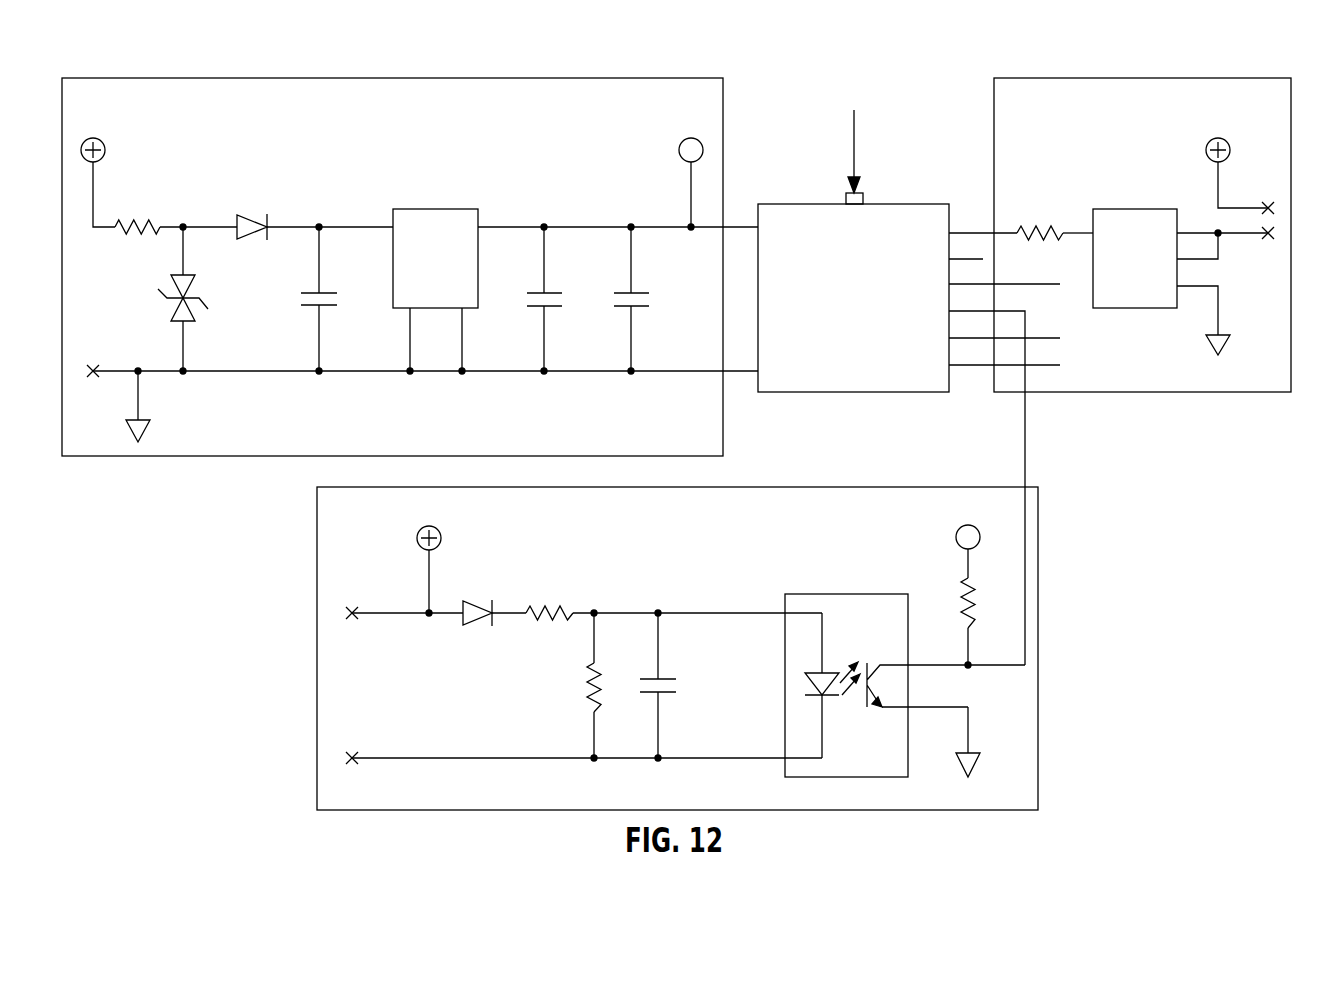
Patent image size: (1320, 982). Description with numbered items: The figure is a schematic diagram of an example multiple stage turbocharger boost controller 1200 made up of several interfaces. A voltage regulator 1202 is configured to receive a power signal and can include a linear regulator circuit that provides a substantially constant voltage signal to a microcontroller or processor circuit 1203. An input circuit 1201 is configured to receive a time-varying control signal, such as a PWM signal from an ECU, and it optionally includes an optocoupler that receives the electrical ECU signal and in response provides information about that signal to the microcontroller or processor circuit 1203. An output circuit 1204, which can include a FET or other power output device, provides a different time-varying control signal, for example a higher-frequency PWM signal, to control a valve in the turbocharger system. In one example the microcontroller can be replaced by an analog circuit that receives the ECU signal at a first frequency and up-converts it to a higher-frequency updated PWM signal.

The circuit 1200 is at (140, 45).
The input circuit 1201 is at (746, 487).
The voltage regulator 1202 is at (394, 78).
The microcontroller or processor circuit 1203 is at (884, 204).
The output circuit 1204 is at (1143, 78).